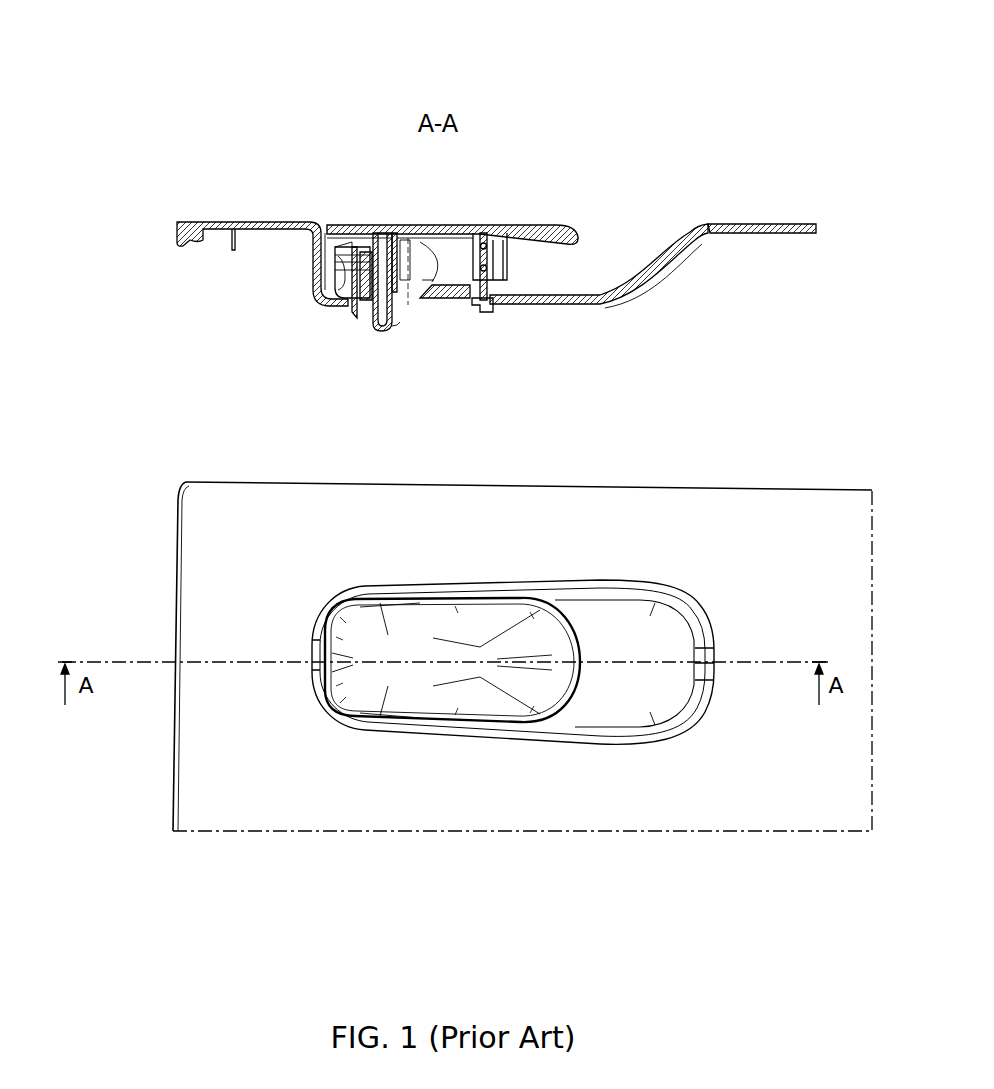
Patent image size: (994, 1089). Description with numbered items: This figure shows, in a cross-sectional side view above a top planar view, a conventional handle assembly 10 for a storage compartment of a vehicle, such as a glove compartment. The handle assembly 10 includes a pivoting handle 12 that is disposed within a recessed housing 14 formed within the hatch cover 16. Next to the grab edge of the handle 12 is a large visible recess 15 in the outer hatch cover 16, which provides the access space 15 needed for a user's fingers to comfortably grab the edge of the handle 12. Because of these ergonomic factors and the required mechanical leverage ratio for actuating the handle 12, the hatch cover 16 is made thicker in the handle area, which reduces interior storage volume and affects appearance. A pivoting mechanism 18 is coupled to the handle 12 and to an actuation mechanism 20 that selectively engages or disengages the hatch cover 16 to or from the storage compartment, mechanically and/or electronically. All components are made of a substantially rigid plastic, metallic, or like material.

The handle assembly 10 is at (504, 180).
The pivoting handle 12 is at (569, 228).
The recessed housing 14 is at (579, 408).
The access space / recess 15 is at (621, 258).
The hatch cover 16 is at (790, 227).
The pivoting mechanism 18 is at (330, 275).
The actuation mechanism 20 is at (348, 320).